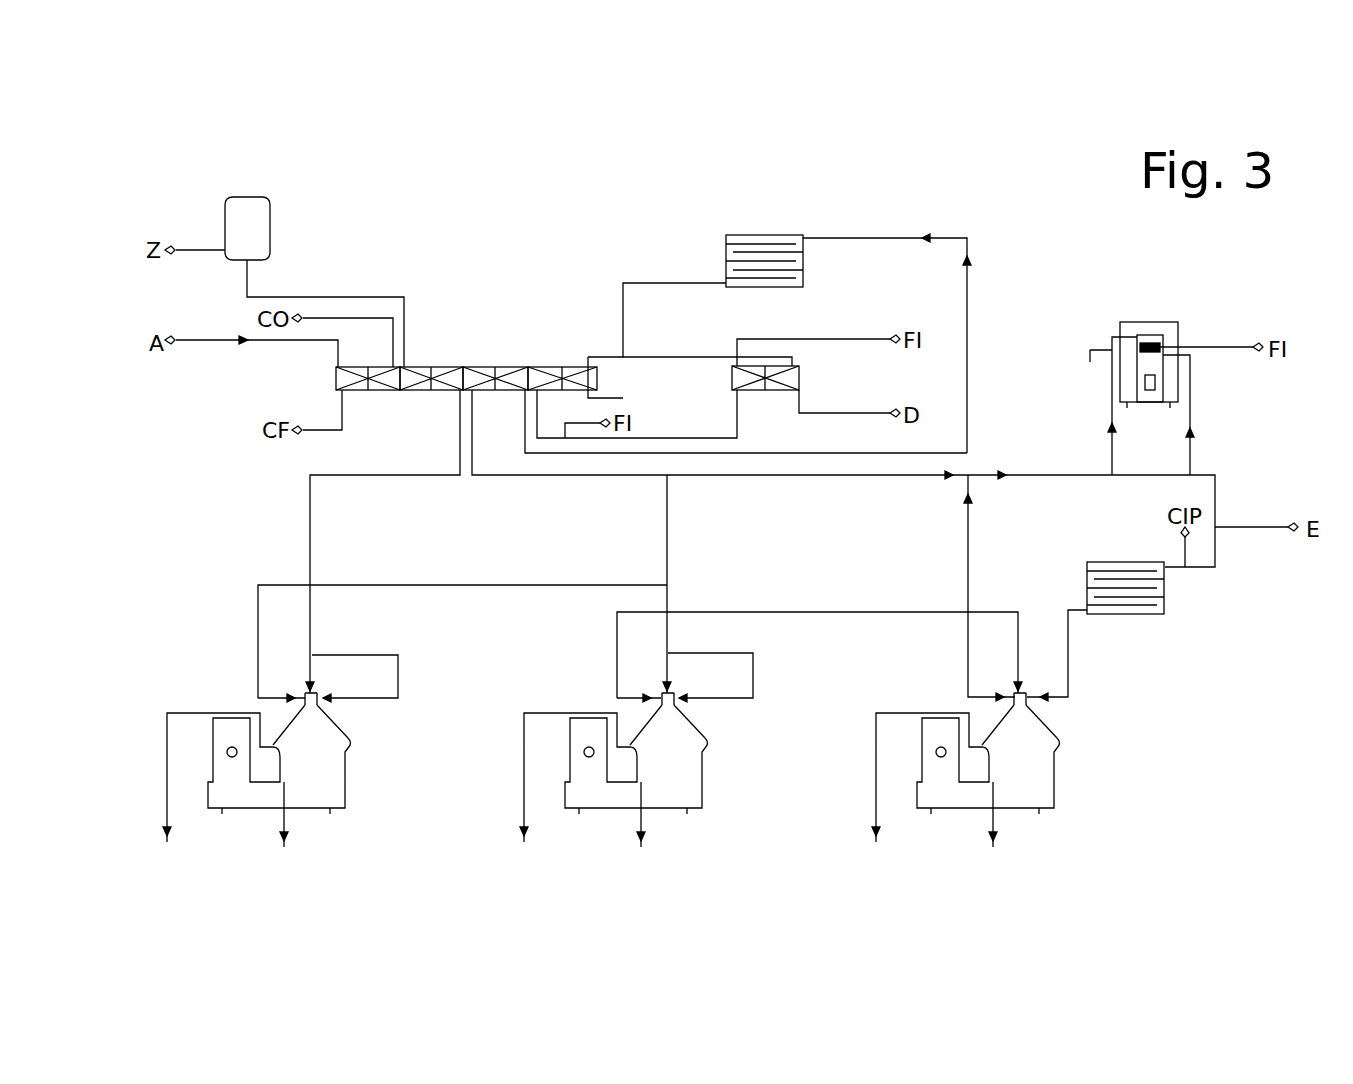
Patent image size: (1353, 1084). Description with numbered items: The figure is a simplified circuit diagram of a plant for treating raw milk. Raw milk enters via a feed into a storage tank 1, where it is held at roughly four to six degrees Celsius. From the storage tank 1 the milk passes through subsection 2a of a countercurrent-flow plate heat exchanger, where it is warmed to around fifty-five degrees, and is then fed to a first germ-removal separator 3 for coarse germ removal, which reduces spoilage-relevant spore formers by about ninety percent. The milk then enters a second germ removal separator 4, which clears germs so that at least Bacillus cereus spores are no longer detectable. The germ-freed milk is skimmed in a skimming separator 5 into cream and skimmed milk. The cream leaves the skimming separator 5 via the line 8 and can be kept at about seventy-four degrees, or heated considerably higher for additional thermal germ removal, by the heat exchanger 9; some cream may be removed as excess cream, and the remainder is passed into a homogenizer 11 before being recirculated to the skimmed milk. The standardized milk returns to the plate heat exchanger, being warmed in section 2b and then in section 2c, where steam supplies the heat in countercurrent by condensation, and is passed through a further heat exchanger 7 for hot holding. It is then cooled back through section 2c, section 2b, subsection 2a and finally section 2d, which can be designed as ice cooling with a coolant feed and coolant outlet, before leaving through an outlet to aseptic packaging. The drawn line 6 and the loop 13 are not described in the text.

The storage tank 1 is at (230, 242).
The subsection of the countercurrent-flow plate heat exchanger 2a is at (437, 368).
The section of the plate heat exchanger 2b is at (492, 368).
The section of the plate heat exchanger 2c is at (560, 368).
The section of the plate heat exchanger 2d is at (378, 393).
The first germ-removal separator 3 is at (330, 783).
The second germ removal separator 4 is at (687, 780).
The skimming separator 5 is at (1038, 768).
The feed line 6 is at (968, 665).
The further heat exchanger 7 is at (765, 245).
The line 8 is at (1068, 668).
The heat exchanger 9 is at (1160, 612).
The homogenizer 11 is at (1160, 337).
The return line 13 is at (968, 300).